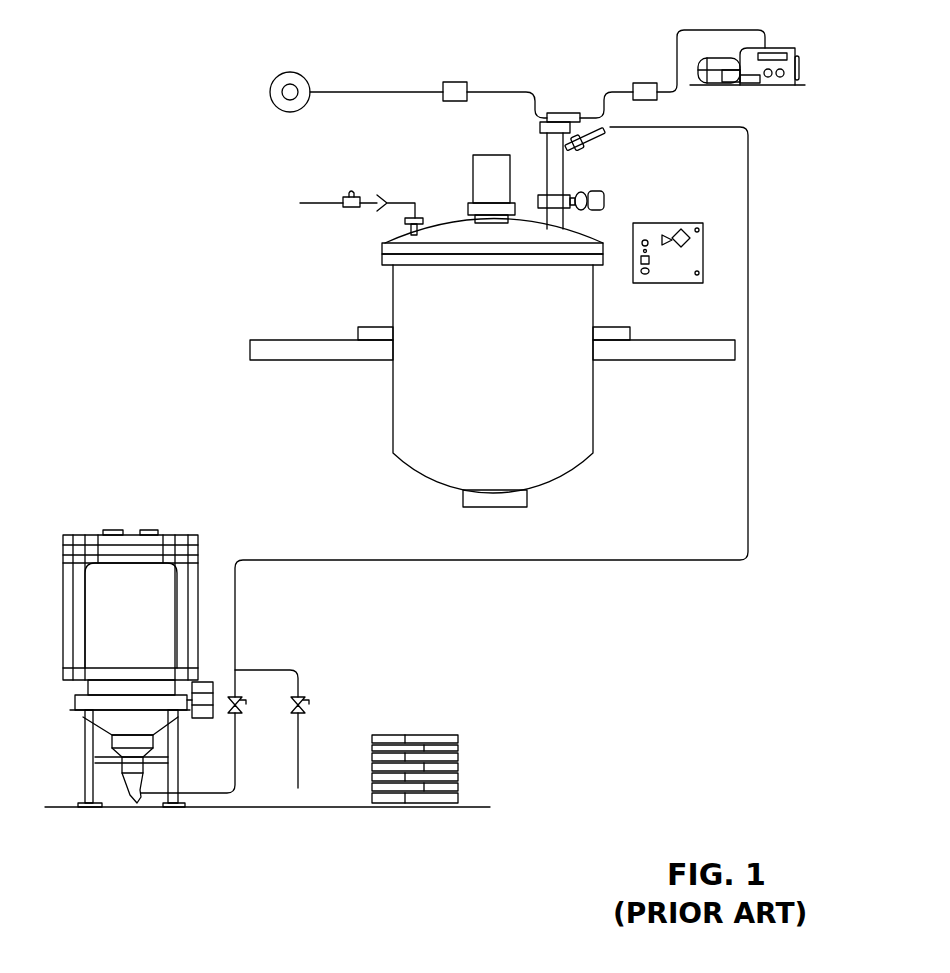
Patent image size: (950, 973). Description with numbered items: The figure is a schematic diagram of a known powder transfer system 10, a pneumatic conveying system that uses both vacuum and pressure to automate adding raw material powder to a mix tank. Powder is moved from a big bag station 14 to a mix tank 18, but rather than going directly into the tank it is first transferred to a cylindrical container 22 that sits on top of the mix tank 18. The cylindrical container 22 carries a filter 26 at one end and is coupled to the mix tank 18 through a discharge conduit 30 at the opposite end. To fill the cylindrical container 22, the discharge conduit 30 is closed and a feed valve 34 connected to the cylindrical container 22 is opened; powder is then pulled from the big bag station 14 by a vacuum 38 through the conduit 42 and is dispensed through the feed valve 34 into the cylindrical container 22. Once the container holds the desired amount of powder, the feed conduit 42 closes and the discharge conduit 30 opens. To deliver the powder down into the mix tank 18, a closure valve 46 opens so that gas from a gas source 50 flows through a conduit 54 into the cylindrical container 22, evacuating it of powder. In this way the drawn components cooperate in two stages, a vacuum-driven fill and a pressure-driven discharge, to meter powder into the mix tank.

The powder transfer system 10 is at (112, 44).
The big bag station 14 is at (168, 516).
The mix tank 18 is at (606, 408).
The cylindrical container 22 is at (558, 182).
The filter 26 is at (558, 112).
The discharge conduit 30 is at (567, 227).
The feed valve 34 is at (590, 143).
The vacuum 38 is at (788, 80).
The conduit 42 is at (750, 402).
The closure valve 46 is at (457, 82).
The gas source 50 is at (272, 100).
The conduit 54 is at (338, 90).